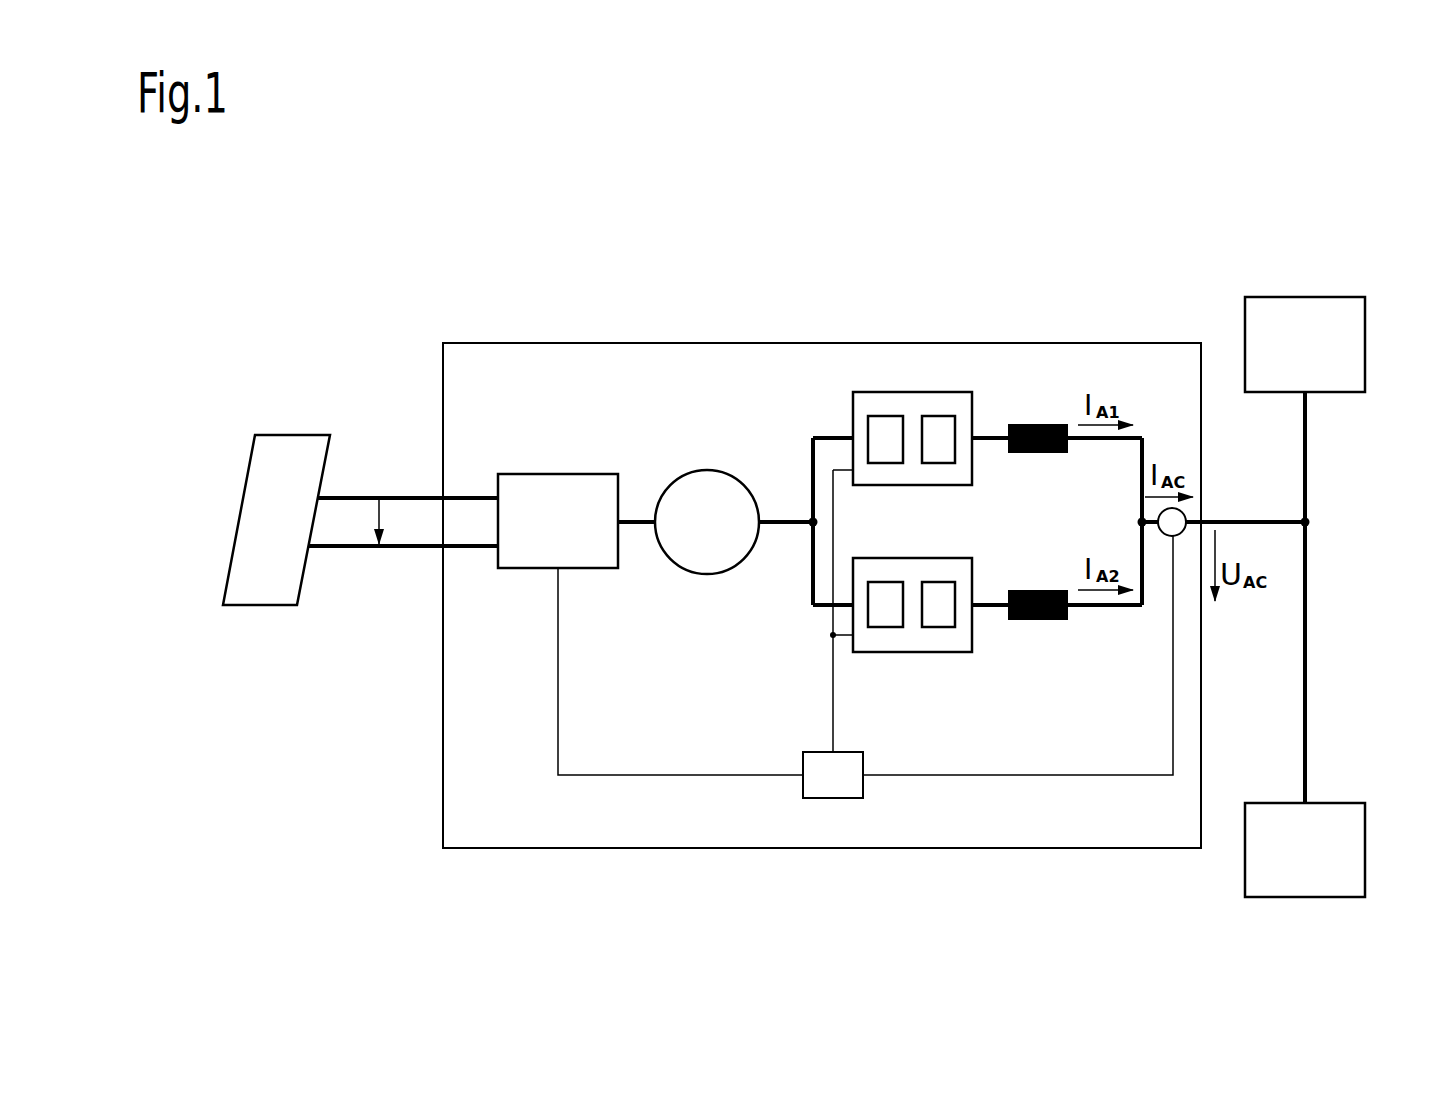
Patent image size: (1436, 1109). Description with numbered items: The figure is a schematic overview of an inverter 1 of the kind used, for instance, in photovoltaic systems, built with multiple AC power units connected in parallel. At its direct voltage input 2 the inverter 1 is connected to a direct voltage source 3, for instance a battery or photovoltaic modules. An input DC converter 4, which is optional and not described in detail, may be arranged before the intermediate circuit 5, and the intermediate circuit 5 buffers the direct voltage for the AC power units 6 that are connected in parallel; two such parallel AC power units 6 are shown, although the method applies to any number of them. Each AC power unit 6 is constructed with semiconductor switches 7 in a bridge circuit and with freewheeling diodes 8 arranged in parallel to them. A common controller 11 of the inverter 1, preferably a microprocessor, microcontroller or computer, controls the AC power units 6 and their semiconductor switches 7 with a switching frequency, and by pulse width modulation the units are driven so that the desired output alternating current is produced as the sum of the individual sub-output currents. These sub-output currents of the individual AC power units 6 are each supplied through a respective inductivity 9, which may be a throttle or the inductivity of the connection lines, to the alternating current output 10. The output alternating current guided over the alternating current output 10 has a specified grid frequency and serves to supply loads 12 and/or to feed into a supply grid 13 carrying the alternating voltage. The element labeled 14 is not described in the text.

The inverter 1 is at (410, 297).
The direct voltage input 2 is at (438, 518).
The direct voltage source 3 is at (258, 605).
The input DC converter 4 is at (558, 474).
The intermediate circuit 5 is at (697, 467).
The AC power unit 6 is at (937, 392).
The semiconductor switch 7 is at (882, 416).
The freewheeling diode 8 is at (880, 332).
The inductivity 9 is at (1032, 424).
The alternating current output 10 is at (1215, 515).
The controller 11 is at (865, 634).
The load 12 is at (1282, 897).
The supply grid 13 is at (1282, 297).
The current sensor 14 is at (1168, 537).